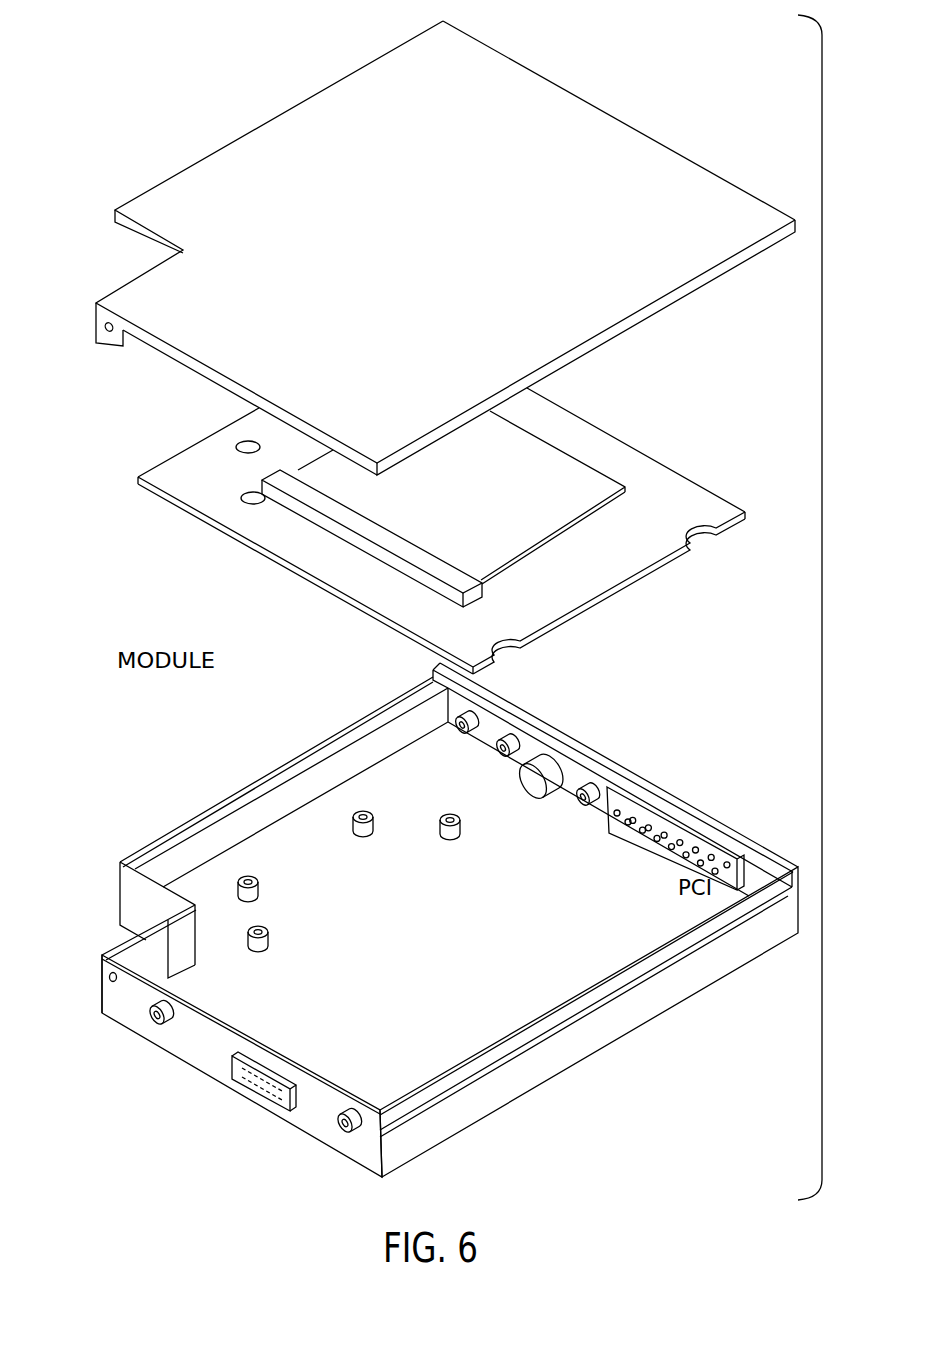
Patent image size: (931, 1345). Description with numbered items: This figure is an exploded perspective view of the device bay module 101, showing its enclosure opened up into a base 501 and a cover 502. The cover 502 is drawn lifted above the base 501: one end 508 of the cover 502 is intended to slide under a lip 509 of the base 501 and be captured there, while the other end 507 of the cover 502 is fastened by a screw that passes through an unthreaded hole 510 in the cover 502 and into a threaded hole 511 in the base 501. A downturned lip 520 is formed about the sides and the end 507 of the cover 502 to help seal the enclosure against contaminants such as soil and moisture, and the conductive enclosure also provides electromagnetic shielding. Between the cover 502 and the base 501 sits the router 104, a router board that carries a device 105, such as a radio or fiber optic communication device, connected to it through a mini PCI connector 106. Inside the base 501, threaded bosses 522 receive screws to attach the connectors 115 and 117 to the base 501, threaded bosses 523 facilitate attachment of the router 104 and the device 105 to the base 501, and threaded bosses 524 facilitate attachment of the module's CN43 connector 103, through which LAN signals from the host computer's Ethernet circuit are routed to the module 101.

The device bay module 101 is at (822, 553).
The CN43 connector 103 is at (232, 1072).
The router 104 is at (606, 598).
The device 105 is at (562, 533).
The mini PCI connector 106 is at (372, 553).
The connector 115 is at (548, 800).
The connector 117 is at (678, 858).
The base 501 is at (497, 1100).
The cover 502 is at (604, 124).
The end of the cover 507 is at (213, 383).
The end of the cover 508 is at (522, 64).
The lip 509 is at (575, 745).
The unthreaded hole 510 is at (98, 330).
The threaded hole 511 is at (108, 981).
The downturned lip 520 is at (118, 230).
The threaded boss 522 is at (512, 742).
The threaded boss 523 is at (437, 833).
The threaded boss 524 is at (158, 1030).